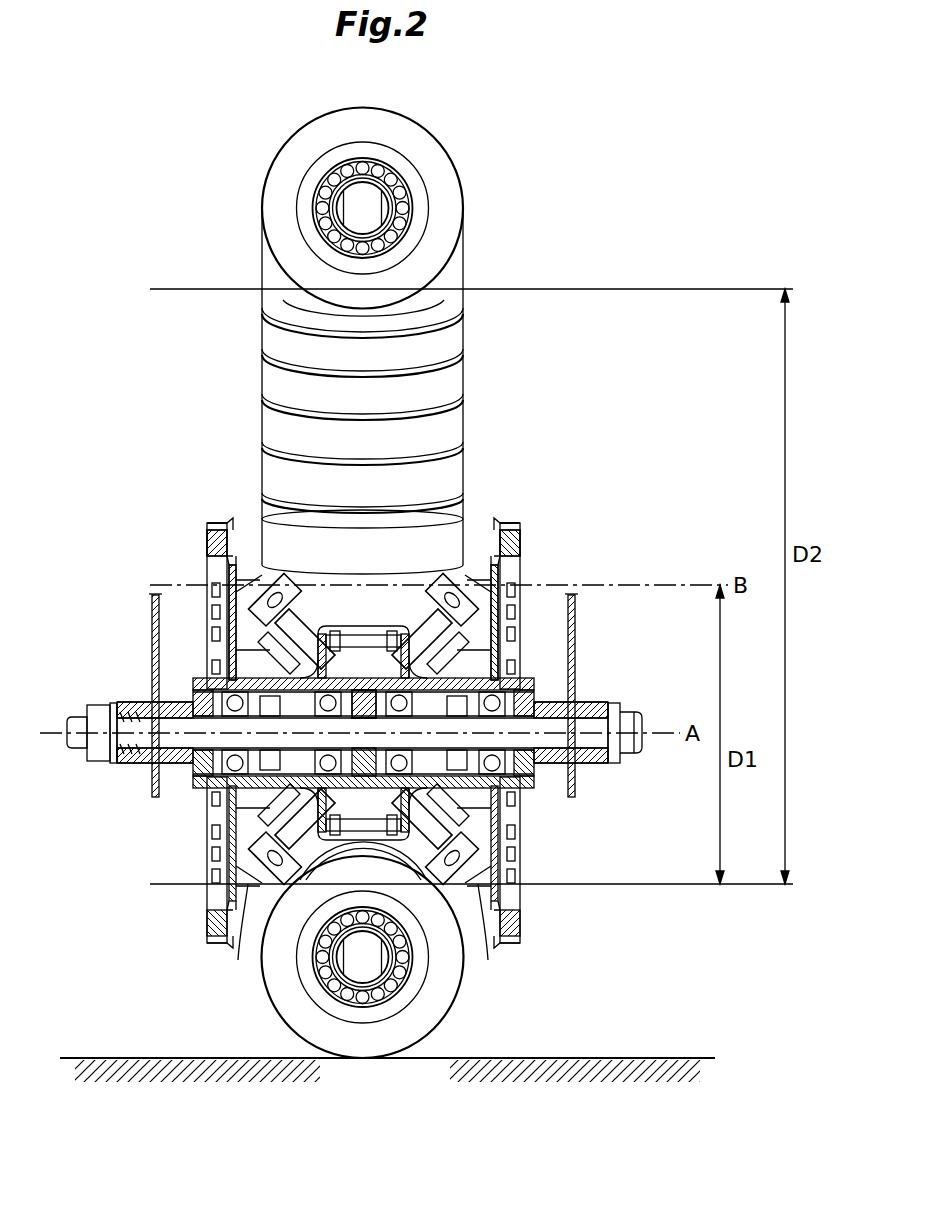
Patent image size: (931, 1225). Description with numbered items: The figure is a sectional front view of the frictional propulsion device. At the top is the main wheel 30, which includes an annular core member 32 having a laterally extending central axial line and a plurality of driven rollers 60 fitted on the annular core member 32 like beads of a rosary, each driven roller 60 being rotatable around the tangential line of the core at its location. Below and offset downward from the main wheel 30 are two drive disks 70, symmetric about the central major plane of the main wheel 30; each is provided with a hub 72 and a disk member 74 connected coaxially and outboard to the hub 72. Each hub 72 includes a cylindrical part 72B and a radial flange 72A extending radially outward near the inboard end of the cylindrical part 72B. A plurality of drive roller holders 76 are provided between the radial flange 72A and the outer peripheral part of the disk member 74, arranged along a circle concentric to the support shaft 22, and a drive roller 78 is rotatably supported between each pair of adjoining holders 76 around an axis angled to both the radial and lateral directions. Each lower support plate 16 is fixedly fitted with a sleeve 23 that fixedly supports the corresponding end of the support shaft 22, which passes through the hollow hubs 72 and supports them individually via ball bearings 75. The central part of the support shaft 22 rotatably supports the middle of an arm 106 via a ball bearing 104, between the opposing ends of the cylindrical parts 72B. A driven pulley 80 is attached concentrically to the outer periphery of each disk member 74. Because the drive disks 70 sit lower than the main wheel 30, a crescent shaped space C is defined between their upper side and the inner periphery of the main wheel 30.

The main wheel 30 is at (446, 132).
The annular core member 32 is at (357, 197).
The driven roller 60 is at (450, 193).
The crescent shaped space C is at (386, 362).
The drive disk 70 is at (215, 531).
The driven pulley 80 is at (207, 548).
The disk member 74 is at (207, 603).
The drive roller holder 76 is at (250, 580).
The drive roller 78 is at (258, 584).
The hub 72 is at (240, 668).
The radial flange 72A is at (358, 628).
The cylindrical part 72B is at (500, 660).
The ball bearing 104 is at (362, 690).
The arm 106 is at (350, 786).
The ball bearing 75 is at (210, 693).
The lower support plate 16 is at (155, 683).
The sleeve 23 is at (135, 763).
The support shaft 22 is at (631, 756).